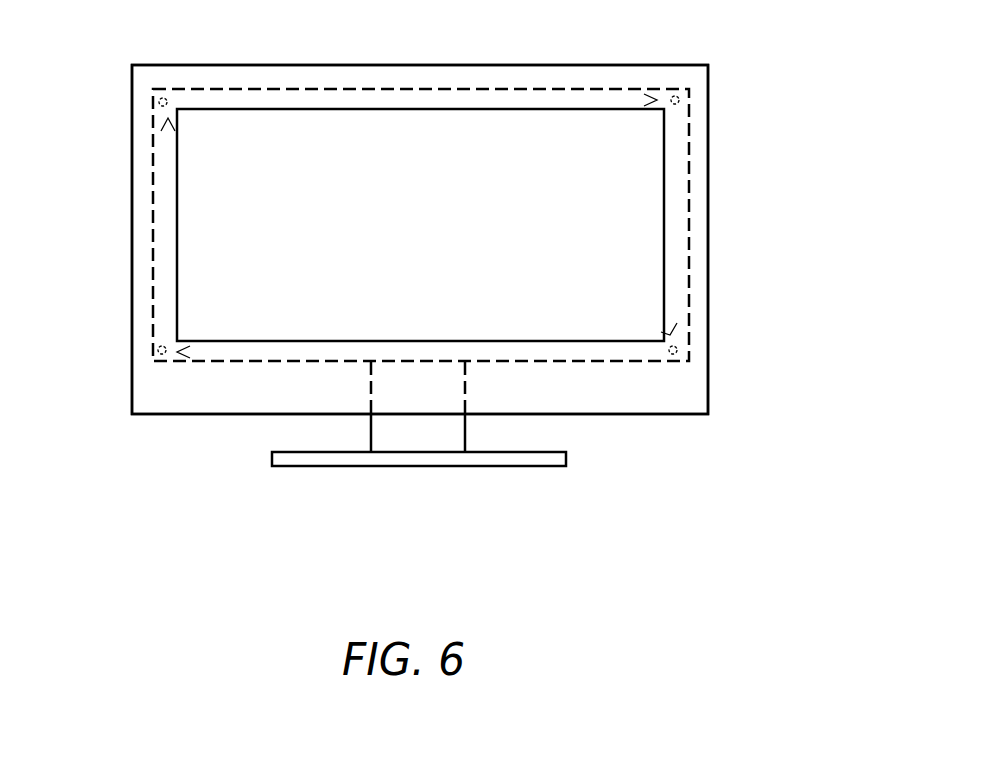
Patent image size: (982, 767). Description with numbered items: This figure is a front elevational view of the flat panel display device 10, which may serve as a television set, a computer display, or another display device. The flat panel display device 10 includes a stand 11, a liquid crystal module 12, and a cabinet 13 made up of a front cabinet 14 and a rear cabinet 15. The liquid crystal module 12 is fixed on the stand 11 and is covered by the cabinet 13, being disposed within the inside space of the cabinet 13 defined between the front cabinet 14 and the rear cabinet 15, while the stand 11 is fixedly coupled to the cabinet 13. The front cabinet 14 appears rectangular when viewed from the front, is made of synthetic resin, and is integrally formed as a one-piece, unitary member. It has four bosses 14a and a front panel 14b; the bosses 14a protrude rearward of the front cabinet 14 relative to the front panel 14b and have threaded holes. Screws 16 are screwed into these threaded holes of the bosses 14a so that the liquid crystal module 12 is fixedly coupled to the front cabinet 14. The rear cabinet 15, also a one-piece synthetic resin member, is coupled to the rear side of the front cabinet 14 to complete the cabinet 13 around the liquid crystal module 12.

The flat panel display device 10 is at (130, 45).
The stand 11 is at (392, 430).
The liquid crystal module 12 is at (598, 362).
The cabinet 13 is at (813, 210).
The front cabinet 14 is at (700, 262).
The bosses 14a is at (155, 112).
The front panel 14b is at (690, 395).
The rear cabinet 15 is at (722, 181).
The screws 16 is at (172, 128).